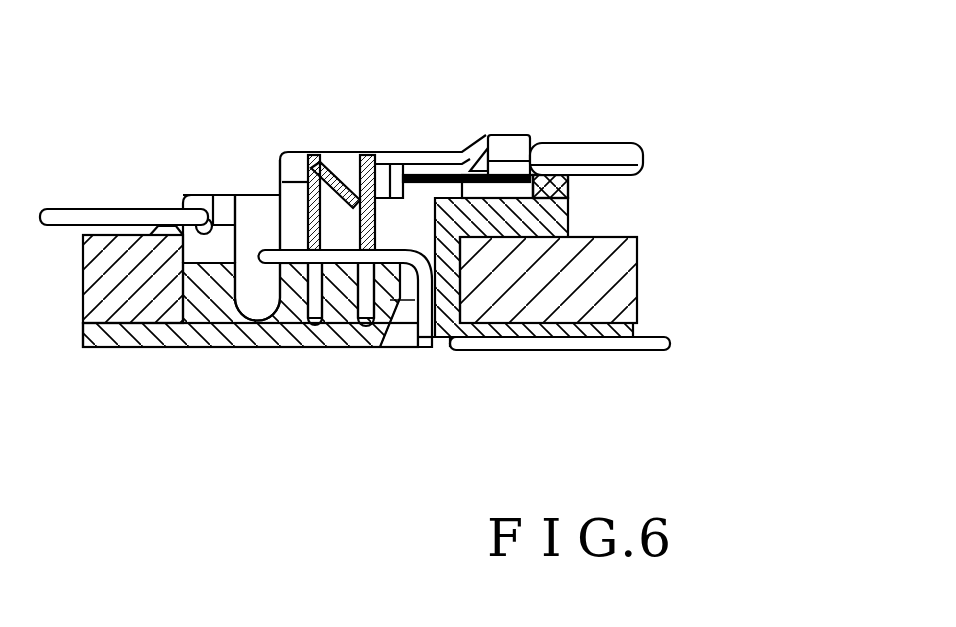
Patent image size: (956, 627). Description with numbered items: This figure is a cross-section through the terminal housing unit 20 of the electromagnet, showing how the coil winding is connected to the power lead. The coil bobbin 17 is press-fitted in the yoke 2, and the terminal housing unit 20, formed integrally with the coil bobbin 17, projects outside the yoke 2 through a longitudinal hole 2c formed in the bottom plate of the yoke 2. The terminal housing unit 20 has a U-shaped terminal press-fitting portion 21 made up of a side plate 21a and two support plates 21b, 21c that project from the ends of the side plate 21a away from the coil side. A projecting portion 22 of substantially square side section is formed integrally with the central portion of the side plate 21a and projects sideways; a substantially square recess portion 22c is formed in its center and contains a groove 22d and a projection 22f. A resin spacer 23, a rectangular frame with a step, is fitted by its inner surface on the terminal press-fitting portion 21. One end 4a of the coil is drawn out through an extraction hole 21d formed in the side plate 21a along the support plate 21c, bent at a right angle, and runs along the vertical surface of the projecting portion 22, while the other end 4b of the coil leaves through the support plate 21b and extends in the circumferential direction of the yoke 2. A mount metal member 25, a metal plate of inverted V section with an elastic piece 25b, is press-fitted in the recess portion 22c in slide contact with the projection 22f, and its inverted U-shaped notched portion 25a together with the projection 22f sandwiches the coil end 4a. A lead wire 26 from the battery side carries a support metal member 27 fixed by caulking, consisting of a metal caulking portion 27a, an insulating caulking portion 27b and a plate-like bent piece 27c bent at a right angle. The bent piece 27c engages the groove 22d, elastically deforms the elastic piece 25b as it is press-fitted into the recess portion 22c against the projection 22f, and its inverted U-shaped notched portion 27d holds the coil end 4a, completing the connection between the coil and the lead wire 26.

The yoke 2 is at (662, 267).
The longitudinal hole 2c is at (450, 340).
The one end of the electromagnetic coil 4a is at (600, 349).
The other end of the electromagnetic coil 4b is at (75, 212).
The coil bobbin 17 is at (120, 347).
The terminal housing unit 20 is at (237, 181).
The terminal press-fitting portion 21 is at (175, 186).
The side plate 21a is at (200, 348).
The support plate 21b is at (190, 285).
The support plate 21c is at (555, 178).
The extraction hole 21d is at (425, 350).
The projecting portion 22 is at (420, 165).
The recess portion 22c is at (314, 325).
The groove 22d is at (388, 335).
The projection 22f is at (337, 248).
The resin spacer 23 is at (577, 207).
The mount metal member 25 is at (297, 158).
The notched portion 25a is at (267, 348).
The elastic piece 25b is at (327, 152).
The lead wire 26 is at (615, 157).
The support metal member 27 is at (392, 143).
The metal caulking portion 27a is at (510, 148).
The insulating caulking portion 27b is at (403, 247).
The bent piece 27c is at (347, 208).
The notched portion 27d is at (370, 325).